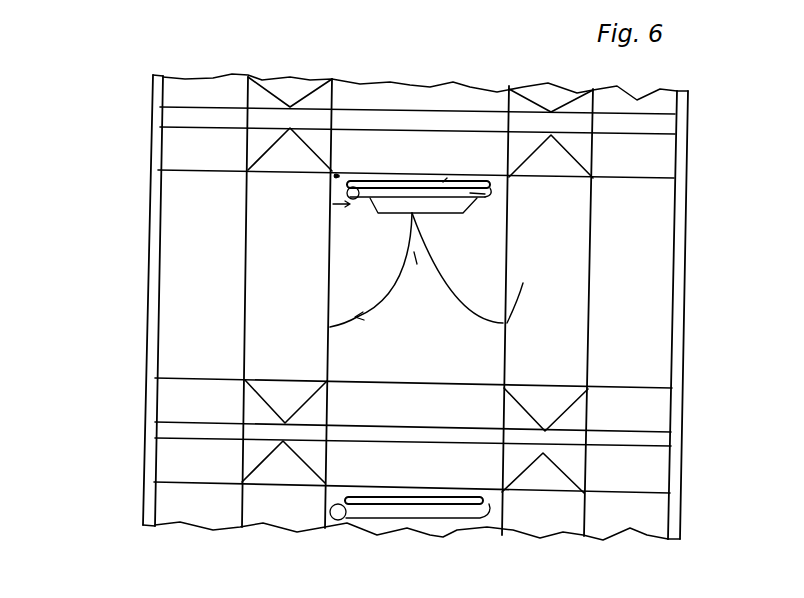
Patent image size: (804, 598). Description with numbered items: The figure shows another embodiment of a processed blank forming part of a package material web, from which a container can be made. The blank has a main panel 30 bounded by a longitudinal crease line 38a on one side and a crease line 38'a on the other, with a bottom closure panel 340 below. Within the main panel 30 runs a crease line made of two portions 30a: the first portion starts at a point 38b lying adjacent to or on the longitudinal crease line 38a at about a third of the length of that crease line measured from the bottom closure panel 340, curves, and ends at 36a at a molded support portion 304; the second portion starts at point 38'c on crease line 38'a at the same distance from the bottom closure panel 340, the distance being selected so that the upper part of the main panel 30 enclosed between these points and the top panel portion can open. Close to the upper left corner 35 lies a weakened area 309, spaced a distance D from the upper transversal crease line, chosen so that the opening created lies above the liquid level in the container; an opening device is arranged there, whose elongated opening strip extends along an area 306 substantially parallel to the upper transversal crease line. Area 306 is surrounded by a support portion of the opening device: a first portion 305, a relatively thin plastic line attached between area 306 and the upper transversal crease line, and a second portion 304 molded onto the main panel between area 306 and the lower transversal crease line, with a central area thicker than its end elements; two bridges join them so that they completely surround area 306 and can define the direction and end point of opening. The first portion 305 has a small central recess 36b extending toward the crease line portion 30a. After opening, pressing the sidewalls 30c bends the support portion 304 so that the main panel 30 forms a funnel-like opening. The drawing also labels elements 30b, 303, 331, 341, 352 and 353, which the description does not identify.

The main panel 30 is at (470, 369).
The crease line portions 30a is at (384, 314).
The outer panel 30b is at (413, 306).
The sidewalls 30c is at (300, 337).
The upper left corner 35 is at (331, 178).
The end point of first crease line portion 36a is at (422, 272).
The central recess 36b is at (443, 182).
The longitudinal crease line 38a is at (333, 247).
The point 38b is at (330, 323).
The crease line 38'a is at (457, 268).
The point 38'c is at (539, 297).
The loop 303 is at (338, 521).
The second portion of support portion 304 is at (443, 216).
The first portion of support portion 305 is at (435, 190).
The area 306 is at (503, 199).
The weakened area 309 is at (333, 204).
The cross beam 331 is at (413, 405).
The bottom closure panel 340 is at (414, 321).
The truss cell 341 is at (412, 285).
The side rail 352 is at (153, 279).
The transverse band 353 is at (173, 118).
The distance D is at (339, 176).